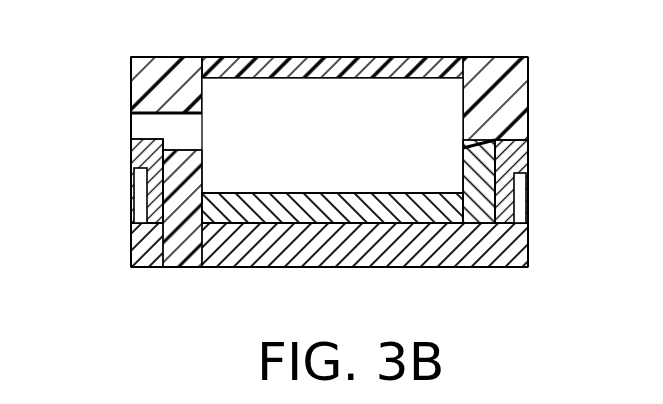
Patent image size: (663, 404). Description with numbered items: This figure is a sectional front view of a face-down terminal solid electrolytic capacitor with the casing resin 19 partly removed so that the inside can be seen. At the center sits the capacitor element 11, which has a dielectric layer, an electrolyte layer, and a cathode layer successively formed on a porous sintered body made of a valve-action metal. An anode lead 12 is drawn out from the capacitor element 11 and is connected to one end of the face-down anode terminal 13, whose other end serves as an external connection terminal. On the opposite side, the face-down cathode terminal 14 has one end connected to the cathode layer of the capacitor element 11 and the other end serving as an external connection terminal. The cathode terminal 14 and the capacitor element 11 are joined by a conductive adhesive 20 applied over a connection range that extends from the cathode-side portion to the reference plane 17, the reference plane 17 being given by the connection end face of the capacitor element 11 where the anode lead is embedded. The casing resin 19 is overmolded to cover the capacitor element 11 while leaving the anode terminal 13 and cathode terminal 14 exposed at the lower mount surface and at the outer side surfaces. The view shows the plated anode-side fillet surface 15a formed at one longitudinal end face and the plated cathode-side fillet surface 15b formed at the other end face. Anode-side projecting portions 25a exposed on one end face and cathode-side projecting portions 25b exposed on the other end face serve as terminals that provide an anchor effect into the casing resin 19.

The capacitor element 11 is at (307, 88).
The anode lead 12 is at (171, 125).
The face-down anode terminal 13 is at (158, 246).
The face-down cathode terminal 14 is at (433, 240).
The anode-side fillet surface 15a is at (135, 205).
The cathode-side fillet surface 15b is at (517, 203).
The reference plane 17 is at (205, 205).
The casing resin 19 is at (421, 72).
The conductive adhesive 20 is at (440, 210).
The anode-side projecting portions 25a is at (133, 142).
The cathode-side projecting portions 25b is at (520, 148).